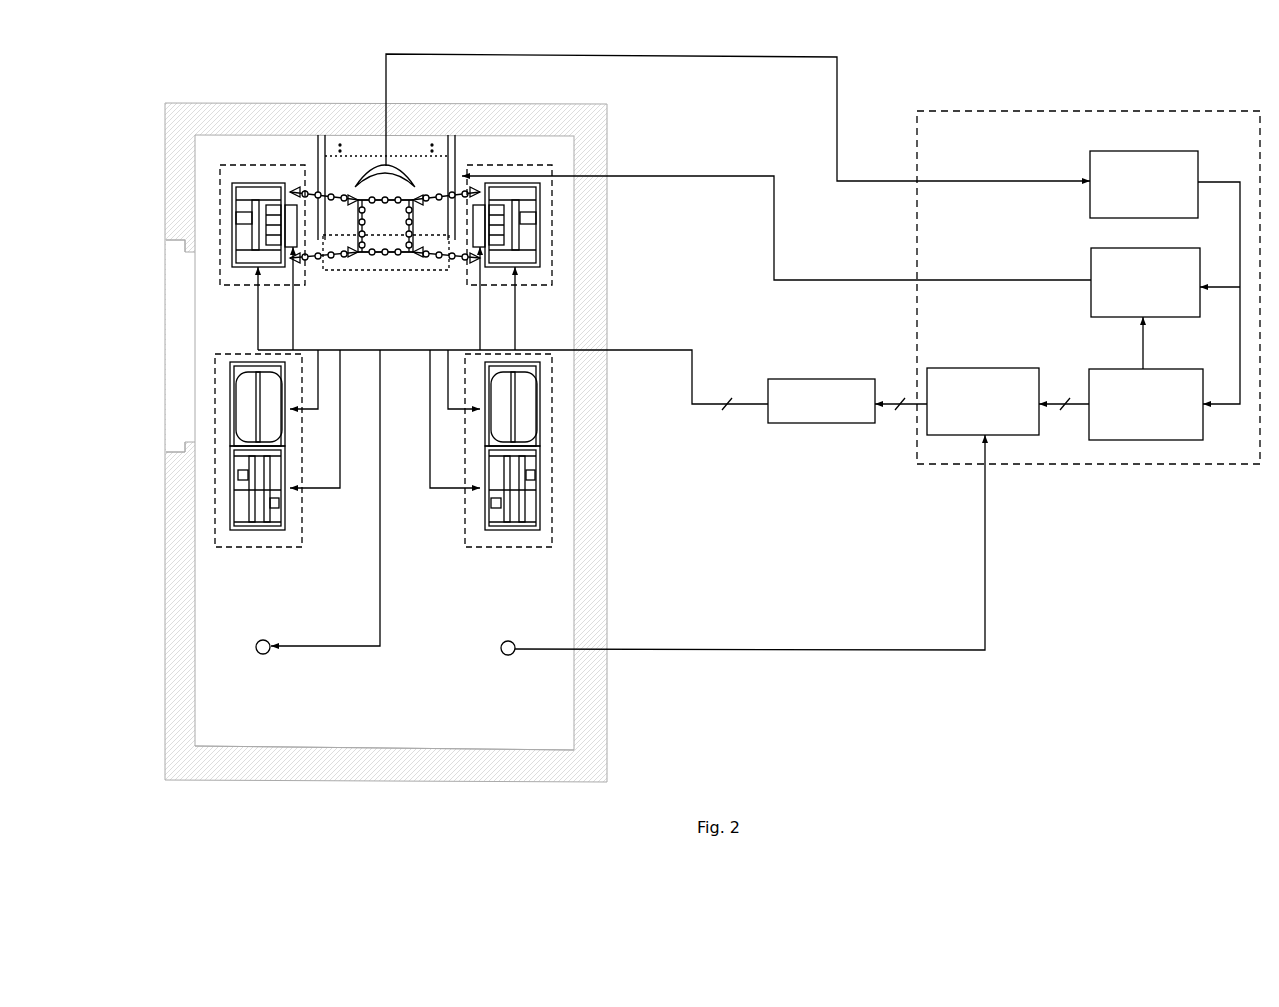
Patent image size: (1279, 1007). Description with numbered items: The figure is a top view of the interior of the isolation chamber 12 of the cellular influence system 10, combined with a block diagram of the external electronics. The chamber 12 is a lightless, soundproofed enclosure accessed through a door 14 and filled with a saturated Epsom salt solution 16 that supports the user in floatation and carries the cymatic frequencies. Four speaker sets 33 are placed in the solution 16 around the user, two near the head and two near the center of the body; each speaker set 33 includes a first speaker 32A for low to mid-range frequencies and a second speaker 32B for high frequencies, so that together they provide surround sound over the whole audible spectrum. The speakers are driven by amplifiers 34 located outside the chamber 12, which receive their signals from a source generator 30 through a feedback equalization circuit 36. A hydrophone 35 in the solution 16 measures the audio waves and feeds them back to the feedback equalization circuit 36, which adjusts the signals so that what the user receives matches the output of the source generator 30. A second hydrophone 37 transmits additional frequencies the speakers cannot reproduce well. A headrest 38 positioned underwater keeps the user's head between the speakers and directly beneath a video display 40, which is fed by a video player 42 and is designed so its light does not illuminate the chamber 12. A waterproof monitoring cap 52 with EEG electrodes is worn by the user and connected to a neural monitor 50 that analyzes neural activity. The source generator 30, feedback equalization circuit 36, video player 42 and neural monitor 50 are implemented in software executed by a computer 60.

The cellular influence system 10 is at (1178, 50).
The isolation chamber 12 is at (372, 422).
The door 14 is at (178, 415).
The solution 16 is at (384, 766).
The source generator 30 is at (1132, 378).
The first speaker 32A is at (283, 205).
The second speaker 32B is at (232, 225).
The speaker set 33 is at (218, 250).
The amplifiers 34 is at (566, 367).
The hydrophone 35 is at (743, 580).
The feedback equalization circuit 36 is at (957, 386).
The hydrophone 37 is at (247, 520).
The headrest 38 is at (385, 259).
The video display 40 is at (435, 168).
The video player 42 is at (831, 246).
The neural monitor 50 is at (1165, 264).
The monitoring cap 52 is at (680, 120).
The computer 60 is at (1088, 317).